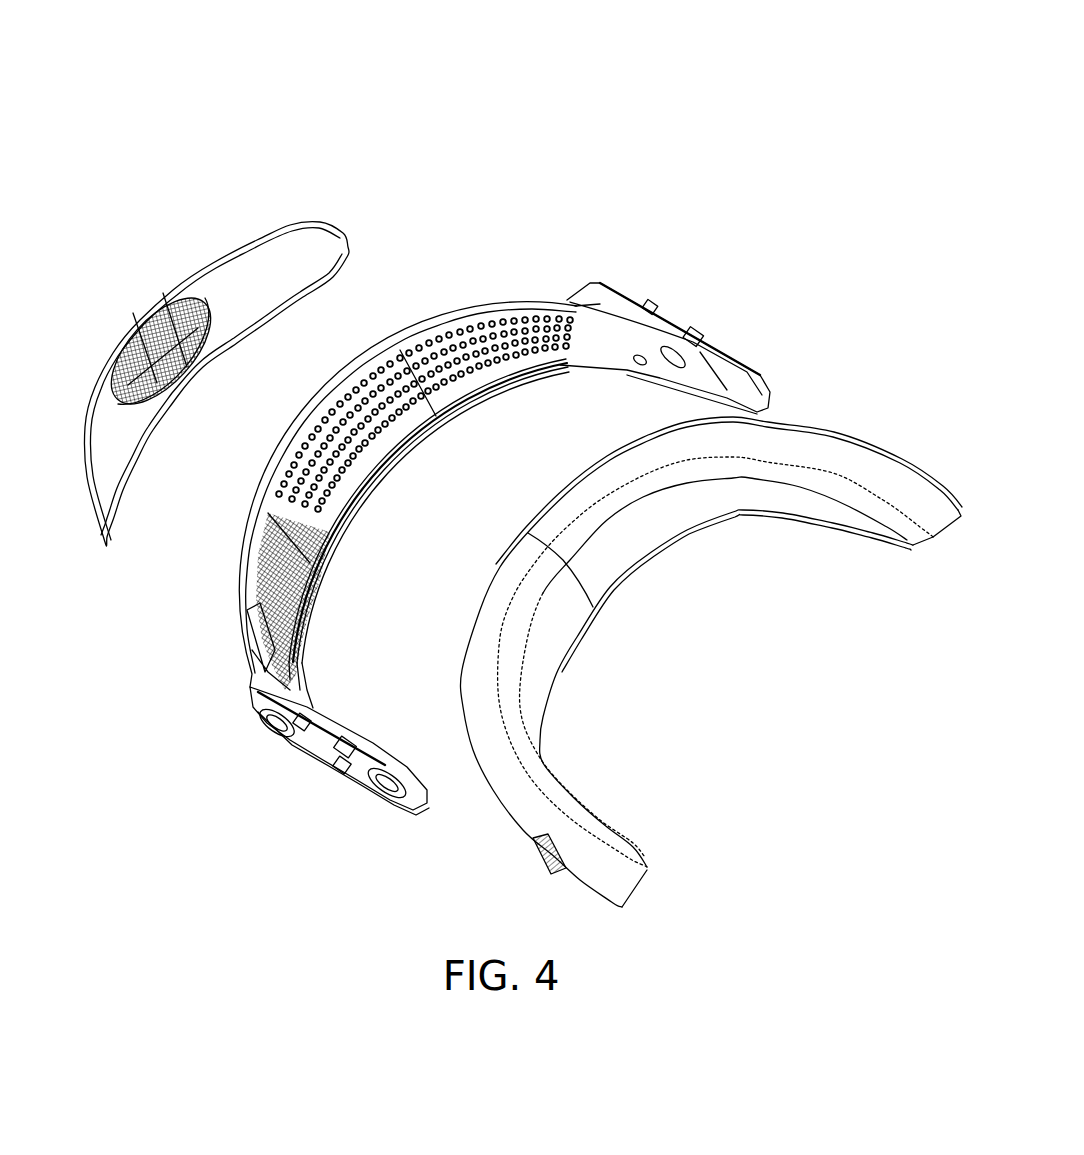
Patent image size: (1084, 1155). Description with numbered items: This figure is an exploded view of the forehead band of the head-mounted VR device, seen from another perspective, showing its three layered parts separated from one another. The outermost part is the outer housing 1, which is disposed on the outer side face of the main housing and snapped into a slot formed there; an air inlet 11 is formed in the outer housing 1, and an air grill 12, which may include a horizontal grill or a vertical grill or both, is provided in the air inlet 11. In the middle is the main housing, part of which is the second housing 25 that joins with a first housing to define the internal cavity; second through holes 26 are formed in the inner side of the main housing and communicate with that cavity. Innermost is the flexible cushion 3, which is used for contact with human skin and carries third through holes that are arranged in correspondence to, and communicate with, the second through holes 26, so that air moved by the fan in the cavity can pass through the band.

The outer housing 1 is at (262, 282).
The air inlet 11 is at (197, 297).
The air grill 12 is at (148, 310).
The second housing 25 is at (615, 348).
The second through holes 26 is at (450, 365).
The flexible cushion 3 is at (747, 500).